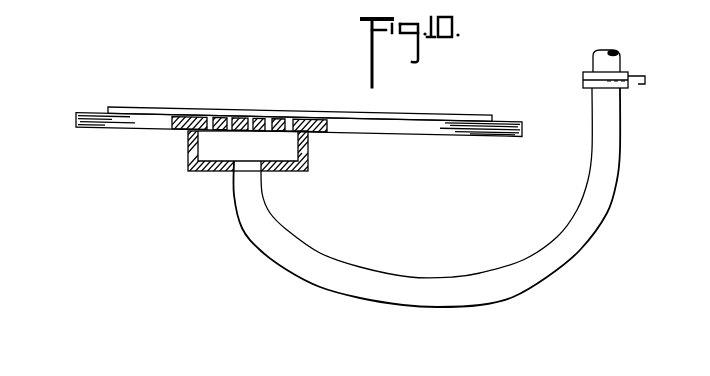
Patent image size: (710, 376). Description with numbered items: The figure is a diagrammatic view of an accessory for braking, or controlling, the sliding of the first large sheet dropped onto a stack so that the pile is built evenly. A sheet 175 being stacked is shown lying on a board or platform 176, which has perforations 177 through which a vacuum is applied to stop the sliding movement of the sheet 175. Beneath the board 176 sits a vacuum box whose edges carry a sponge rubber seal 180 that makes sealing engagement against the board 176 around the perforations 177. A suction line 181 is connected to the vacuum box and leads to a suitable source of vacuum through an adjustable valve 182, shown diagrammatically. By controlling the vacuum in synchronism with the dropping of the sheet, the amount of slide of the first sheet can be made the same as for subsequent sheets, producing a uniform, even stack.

The sheet 175 is at (149, 106).
The board or platform 176 is at (492, 137).
The perforations 177 is at (270, 117).
The sponge rubber seal 180 is at (213, 176).
The suction line 181 is at (411, 283).
The adjustable valve 182 is at (622, 62).